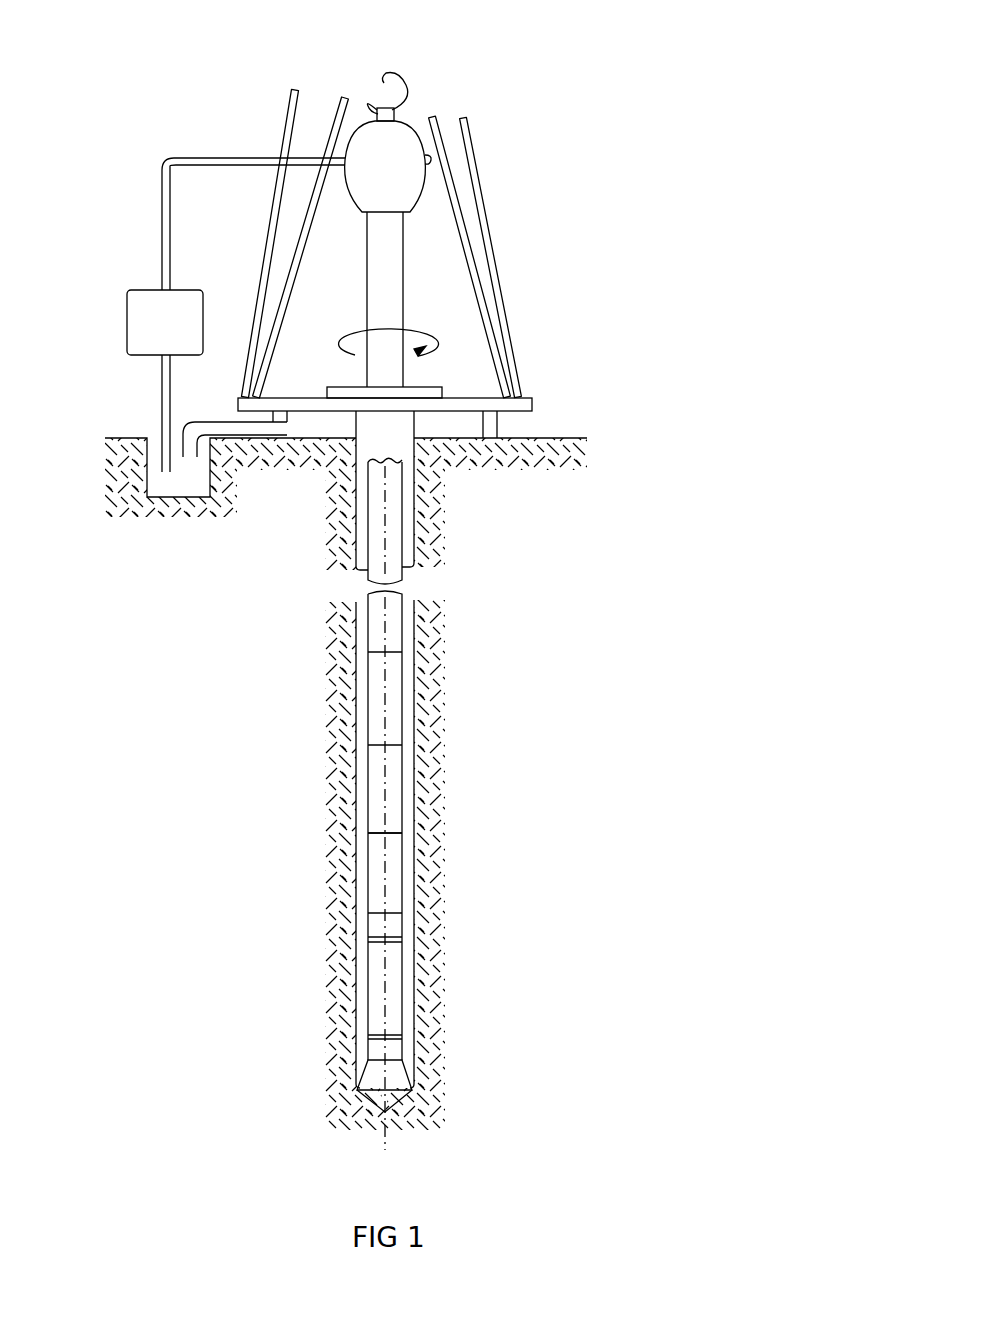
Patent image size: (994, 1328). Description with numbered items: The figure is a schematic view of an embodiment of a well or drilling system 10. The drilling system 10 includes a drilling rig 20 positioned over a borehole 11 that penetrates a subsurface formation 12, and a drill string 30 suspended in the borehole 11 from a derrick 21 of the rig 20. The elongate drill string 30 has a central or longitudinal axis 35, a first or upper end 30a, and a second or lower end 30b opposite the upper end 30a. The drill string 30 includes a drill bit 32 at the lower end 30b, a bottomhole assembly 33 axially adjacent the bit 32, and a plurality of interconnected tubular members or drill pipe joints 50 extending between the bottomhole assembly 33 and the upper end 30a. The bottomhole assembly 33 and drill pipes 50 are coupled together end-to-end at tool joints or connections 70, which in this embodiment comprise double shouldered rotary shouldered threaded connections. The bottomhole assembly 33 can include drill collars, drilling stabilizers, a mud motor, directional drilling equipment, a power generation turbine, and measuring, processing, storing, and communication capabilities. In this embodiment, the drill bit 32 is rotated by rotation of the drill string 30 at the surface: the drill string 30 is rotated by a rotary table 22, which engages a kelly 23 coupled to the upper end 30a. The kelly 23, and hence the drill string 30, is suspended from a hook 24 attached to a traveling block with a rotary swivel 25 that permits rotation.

The drilling system 10 is at (722, 114).
The borehole 11 is at (412, 553).
The subsurface formation 12 is at (427, 797).
The drilling rig 20 is at (526, 130).
The derrick 21 is at (290, 132).
The rotary table 22 is at (433, 390).
The kelly 23 is at (395, 303).
The hook 24 is at (387, 83).
The rotary swivel 25 is at (385, 190).
The drill string 30 is at (377, 630).
The upper end 30a is at (385, 412).
The lower end 30b is at (400, 940).
The drill bit 32 is at (372, 1073).
The bottomhole assembly 33 is at (393, 987).
The longitudinal axis 35 is at (387, 1150).
The drill pipe joints 50 is at (393, 720).
The tool joints 70 is at (372, 745).